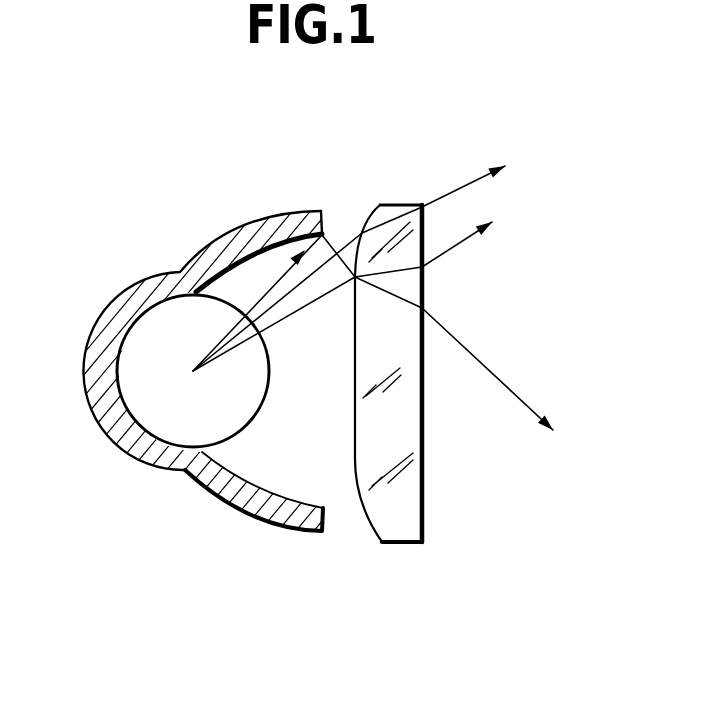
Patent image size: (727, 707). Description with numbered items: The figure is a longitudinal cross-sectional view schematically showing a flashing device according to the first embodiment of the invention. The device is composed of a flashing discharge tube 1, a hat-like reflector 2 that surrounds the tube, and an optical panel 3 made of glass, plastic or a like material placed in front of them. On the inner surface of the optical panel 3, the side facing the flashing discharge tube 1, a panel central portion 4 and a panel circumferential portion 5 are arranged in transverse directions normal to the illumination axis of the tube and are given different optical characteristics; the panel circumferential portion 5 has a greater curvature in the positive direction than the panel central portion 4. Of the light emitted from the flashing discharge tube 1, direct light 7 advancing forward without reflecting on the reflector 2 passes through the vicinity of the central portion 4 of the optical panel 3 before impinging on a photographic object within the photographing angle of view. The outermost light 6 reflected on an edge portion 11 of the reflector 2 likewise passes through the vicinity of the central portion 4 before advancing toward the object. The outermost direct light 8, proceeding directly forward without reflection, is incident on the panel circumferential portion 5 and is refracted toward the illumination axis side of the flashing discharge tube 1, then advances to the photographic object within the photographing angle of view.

The flashing discharge tube 1 is at (137, 410).
The hat-like reflector 2 is at (210, 487).
The optical panel 3 is at (397, 540).
The panel central portion 4 is at (340, 408).
The panel circumferential portion 5 is at (374, 194).
The outermost light 6 is at (518, 393).
The direct light 7 is at (467, 243).
The outermost direct light 8 is at (458, 188).
The edge portion 11 is at (330, 218).